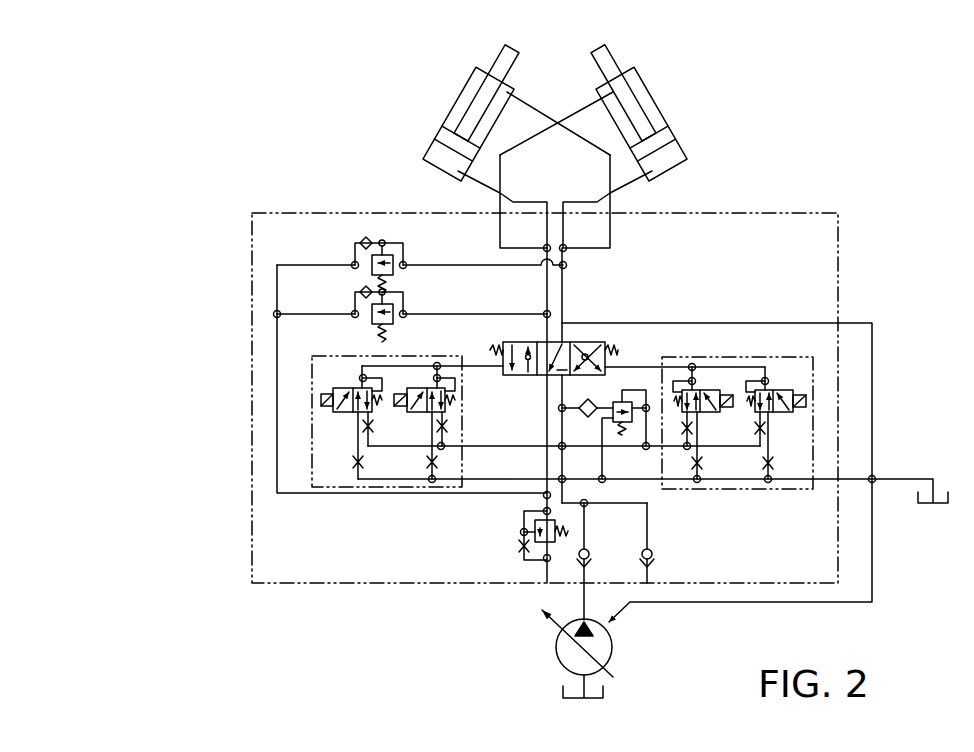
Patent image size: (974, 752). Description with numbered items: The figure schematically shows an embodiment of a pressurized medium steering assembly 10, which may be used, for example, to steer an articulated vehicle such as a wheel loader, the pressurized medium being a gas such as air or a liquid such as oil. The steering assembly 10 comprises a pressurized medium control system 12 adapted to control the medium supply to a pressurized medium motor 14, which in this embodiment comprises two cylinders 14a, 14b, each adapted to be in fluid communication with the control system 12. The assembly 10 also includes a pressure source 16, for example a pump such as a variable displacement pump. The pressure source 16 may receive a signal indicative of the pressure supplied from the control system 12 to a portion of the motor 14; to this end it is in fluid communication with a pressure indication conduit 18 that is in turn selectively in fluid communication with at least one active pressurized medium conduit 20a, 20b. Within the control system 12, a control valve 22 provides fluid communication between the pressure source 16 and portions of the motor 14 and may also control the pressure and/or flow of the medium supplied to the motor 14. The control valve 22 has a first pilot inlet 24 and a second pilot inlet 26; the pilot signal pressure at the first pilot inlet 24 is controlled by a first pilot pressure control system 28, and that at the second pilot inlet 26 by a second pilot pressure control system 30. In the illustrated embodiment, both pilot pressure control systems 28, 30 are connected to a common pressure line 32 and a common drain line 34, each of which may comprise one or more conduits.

The pressurized medium steering assembly 10 is at (180, 183).
The pressurized medium control system 12 is at (250, 513).
The pressurized medium motor 14 is at (593, 143).
The cylinder 14a is at (658, 102).
The cylinder 14b is at (453, 102).
The pressure source 16 is at (535, 647).
The pressure indication conduit 18 is at (750, 323).
The active pressurized medium conduit 20a is at (565, 295).
The active pressurized medium conduit 20b is at (545, 293).
The control valve 22 is at (556, 324).
The first pilot inlet 24 is at (498, 362).
The second pilot inlet 26 is at (618, 360).
The first pilot pressure control system 28 is at (308, 436).
The second pilot pressure control system 30 is at (817, 440).
The pressure line 32 is at (495, 443).
The drain line 34 is at (496, 480).